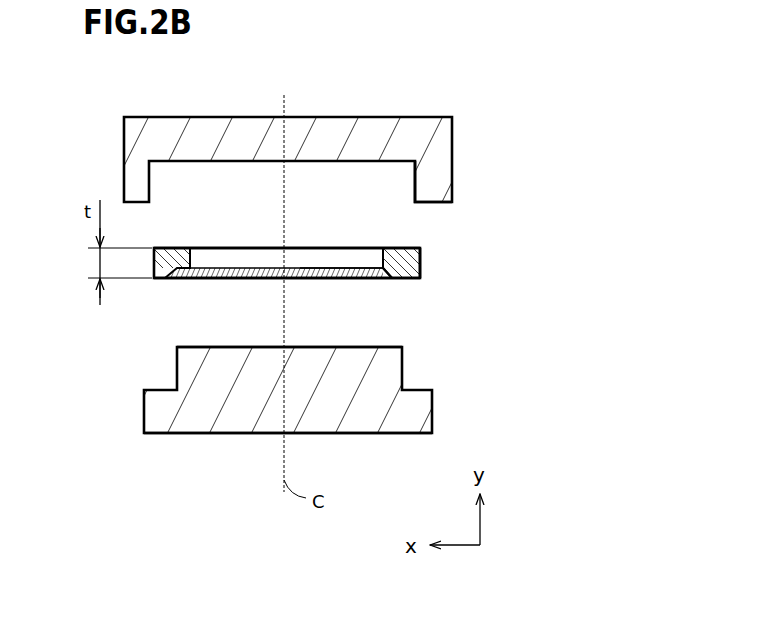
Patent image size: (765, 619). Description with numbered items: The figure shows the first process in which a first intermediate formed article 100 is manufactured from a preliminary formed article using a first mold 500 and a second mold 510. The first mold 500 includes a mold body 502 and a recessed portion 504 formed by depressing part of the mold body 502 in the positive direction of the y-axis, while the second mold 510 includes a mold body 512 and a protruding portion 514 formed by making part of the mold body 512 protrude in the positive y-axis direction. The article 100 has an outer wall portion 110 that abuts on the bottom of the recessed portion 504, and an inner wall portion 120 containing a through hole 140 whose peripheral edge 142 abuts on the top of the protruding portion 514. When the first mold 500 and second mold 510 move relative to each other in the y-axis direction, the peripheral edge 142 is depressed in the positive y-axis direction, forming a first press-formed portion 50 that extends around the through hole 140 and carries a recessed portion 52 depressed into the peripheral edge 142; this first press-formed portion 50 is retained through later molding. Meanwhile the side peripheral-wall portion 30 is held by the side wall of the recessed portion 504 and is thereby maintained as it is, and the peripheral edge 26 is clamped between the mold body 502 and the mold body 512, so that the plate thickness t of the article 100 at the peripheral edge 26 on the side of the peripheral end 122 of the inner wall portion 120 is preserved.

The first mold 500 is at (430, 84).
The mold body 502 is at (360, 116).
The recessed portion 504 is at (414, 172).
The second mold 510 is at (444, 417).
The mold body 512 is at (350, 425).
The protruding portion 514 is at (393, 367).
The first intermediate formed article 100 is at (434, 255).
The outer wall portion 110 is at (183, 242).
The inner wall portion 120 is at (166, 284).
The peripheral end 122 is at (422, 278).
The through hole 140 is at (383, 257).
The peripheral edge 142 is at (388, 270).
The peripheral edge 26 is at (157, 284).
The side peripheral-wall portion 30 is at (423, 268).
The first press-formed portion 50 is at (309, 283).
The recessed portion 52 is at (340, 273).